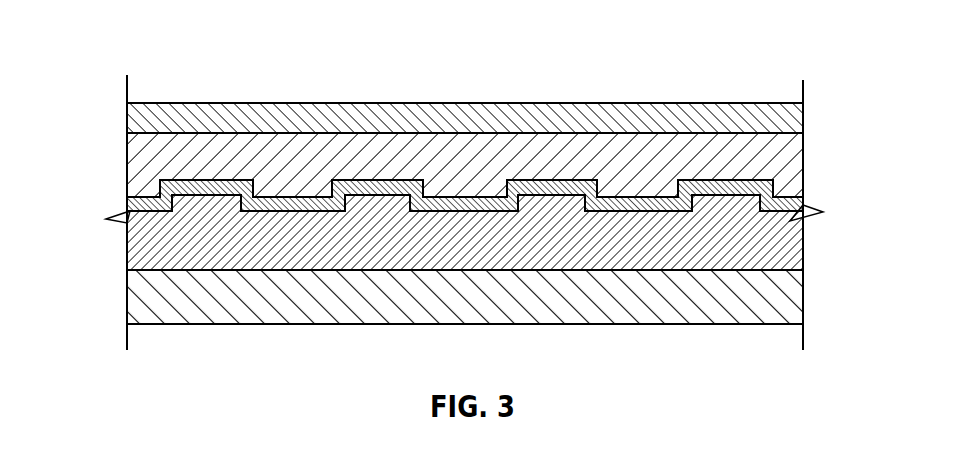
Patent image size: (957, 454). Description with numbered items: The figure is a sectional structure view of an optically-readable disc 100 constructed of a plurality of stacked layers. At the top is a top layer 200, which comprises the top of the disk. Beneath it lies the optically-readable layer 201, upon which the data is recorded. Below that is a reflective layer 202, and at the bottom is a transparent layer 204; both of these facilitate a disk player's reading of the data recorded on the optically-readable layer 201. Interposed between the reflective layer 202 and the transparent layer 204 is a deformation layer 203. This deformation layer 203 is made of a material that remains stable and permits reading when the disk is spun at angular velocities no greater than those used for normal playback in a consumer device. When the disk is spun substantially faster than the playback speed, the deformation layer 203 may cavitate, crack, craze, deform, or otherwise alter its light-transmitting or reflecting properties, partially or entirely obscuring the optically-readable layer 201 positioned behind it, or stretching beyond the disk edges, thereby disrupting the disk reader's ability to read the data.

The optically-readable disc 100 is at (133, 52).
The top layer 200 is at (786, 121).
The optically-readable layer 201 is at (787, 175).
The reflective layer 202 is at (800, 222).
The deformation layer 203 is at (137, 247).
The transparent layer 204 is at (213, 312).